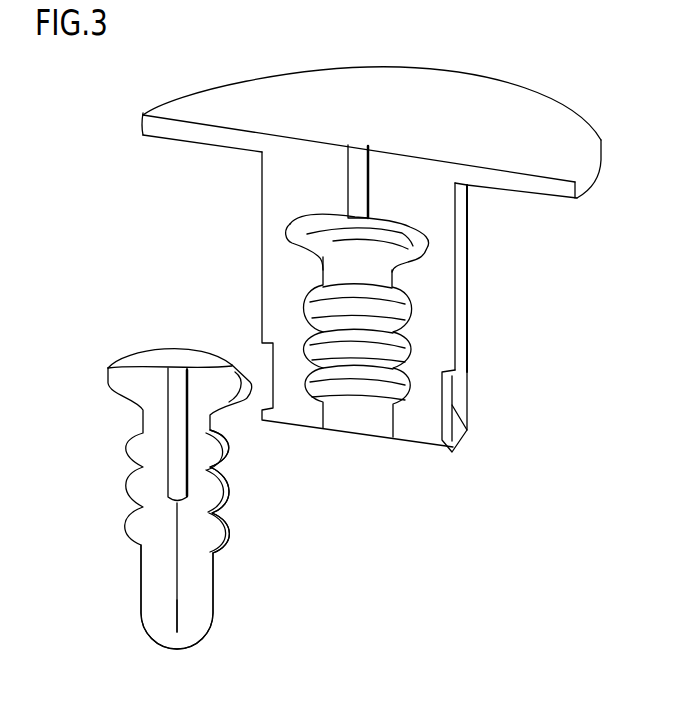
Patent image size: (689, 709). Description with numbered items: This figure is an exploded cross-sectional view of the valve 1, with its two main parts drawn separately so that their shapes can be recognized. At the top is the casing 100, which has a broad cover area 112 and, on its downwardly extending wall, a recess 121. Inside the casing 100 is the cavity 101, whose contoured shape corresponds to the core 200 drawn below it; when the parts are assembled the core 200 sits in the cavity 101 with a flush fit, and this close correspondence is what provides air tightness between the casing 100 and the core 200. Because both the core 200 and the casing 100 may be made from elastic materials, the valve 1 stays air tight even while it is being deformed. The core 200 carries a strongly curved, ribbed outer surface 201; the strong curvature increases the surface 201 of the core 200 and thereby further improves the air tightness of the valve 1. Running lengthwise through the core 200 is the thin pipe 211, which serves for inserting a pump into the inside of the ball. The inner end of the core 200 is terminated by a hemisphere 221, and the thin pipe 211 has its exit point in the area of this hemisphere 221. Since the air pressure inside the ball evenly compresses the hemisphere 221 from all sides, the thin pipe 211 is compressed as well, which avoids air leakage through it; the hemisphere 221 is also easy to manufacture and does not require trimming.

The valve 1 is at (578, 90).
The casing 100 is at (250, 227).
The cavity 101 is at (362, 413).
The cover area 112 is at (178, 96).
The recess 121 is at (456, 393).
The core 200 is at (112, 446).
The surface 201 is at (232, 488).
The thin pipe 211 is at (170, 587).
The hemisphere 221 is at (197, 630).